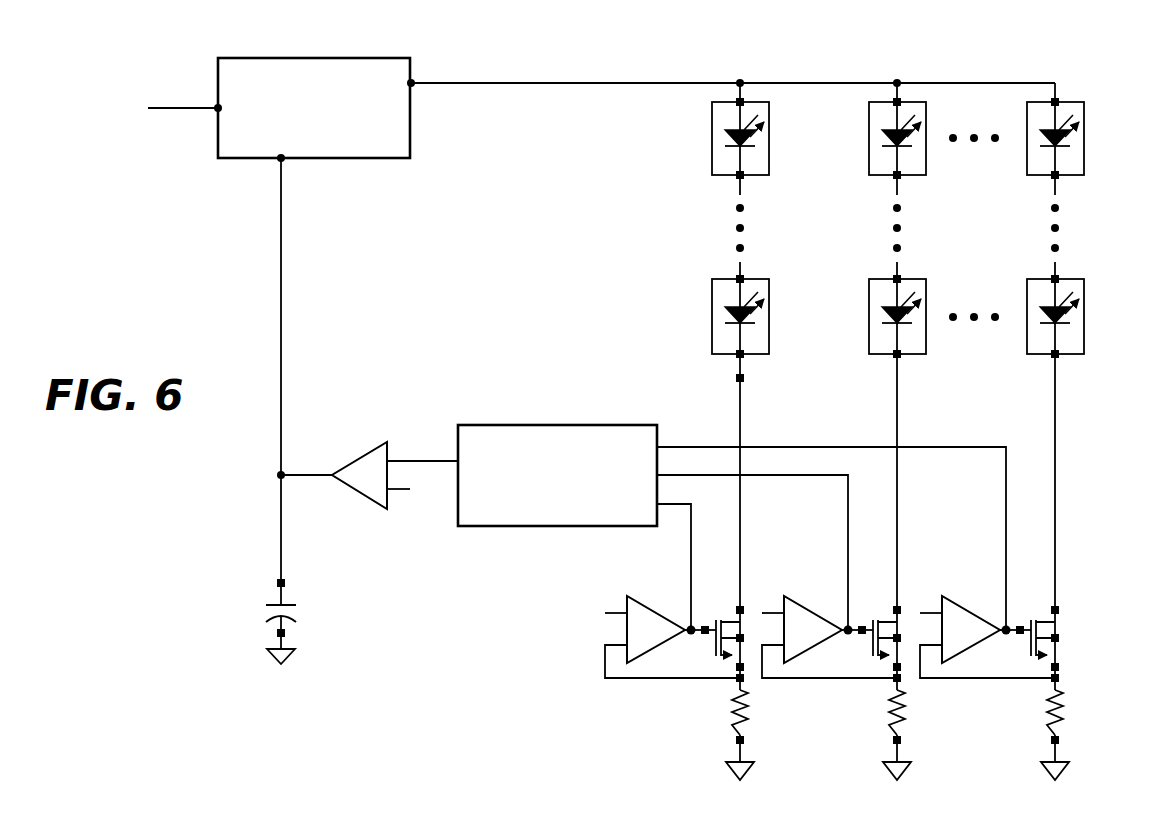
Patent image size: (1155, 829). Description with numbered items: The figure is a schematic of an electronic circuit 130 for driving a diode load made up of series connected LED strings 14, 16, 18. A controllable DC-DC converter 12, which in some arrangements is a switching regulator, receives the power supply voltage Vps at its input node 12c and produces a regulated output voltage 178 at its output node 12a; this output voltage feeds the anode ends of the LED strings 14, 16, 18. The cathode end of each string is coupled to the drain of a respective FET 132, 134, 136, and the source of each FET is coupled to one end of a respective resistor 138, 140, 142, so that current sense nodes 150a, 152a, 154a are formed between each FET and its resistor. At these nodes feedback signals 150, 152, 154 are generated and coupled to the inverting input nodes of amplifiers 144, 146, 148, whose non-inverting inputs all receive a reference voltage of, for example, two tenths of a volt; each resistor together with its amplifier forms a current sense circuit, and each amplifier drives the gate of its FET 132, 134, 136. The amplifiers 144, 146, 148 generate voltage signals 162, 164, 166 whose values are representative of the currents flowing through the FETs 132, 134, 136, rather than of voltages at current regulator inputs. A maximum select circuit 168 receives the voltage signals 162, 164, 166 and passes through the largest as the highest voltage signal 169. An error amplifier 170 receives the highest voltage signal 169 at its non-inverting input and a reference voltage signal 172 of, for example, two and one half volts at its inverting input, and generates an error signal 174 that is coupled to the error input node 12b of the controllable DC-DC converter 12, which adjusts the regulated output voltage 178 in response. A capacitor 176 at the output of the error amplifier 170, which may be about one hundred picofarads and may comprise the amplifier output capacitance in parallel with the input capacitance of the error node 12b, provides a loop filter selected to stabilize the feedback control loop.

The electronic circuit 130 is at (648, 50).
The controllable DC-DC converter 12 is at (314, 108).
The output node 12a is at (413, 82).
The error input node 12b is at (283, 160).
The input node 12c is at (216, 110).
The regulated output voltage 178 is at (815, 82).
The series connected LED string 14 is at (755, 178).
The series connected LED string 16 is at (912, 178).
The series connected LED string 18 is at (1070, 178).
The error signal 174 is at (285, 284).
The capacitor 176 is at (268, 610).
The error amplifier 170 is at (371, 441).
The highest voltage signal 169 is at (414, 459).
The reference voltage signal 172 is at (425, 500).
The maximum select circuit 168 is at (583, 424).
The voltage signal 166 is at (836, 446).
The voltage signal 164 is at (778, 478).
The voltage signal 162 is at (694, 557).
The amplifier 144 is at (641, 598).
The amplifier 146 is at (798, 598).
The amplifier 148 is at (956, 598).
The FET 132 is at (715, 650).
The FET 134 is at (872, 650).
The FET 136 is at (1030, 650).
The feedback signal 150 is at (648, 680).
The feedback signal 152 is at (830, 680).
The feedback signal 154 is at (988, 680).
The current sense node 150a is at (738, 680).
The current sense node 152a is at (895, 680).
The current sense node 154a is at (1053, 680).
The resistor 138 is at (749, 708).
The resistor 140 is at (906, 708).
The resistor 142 is at (1064, 708).